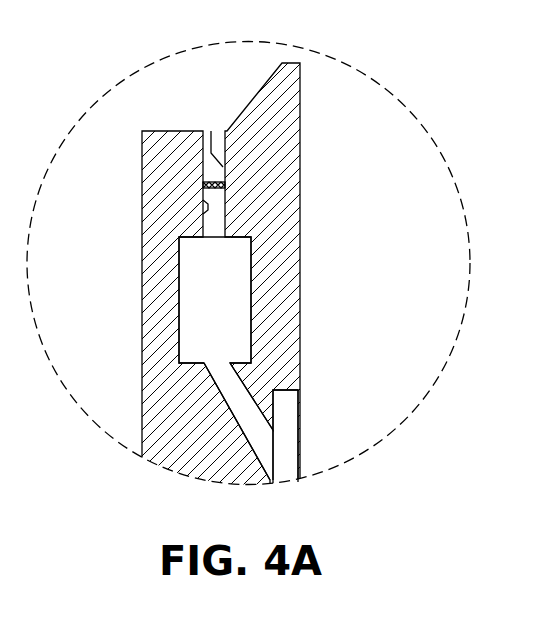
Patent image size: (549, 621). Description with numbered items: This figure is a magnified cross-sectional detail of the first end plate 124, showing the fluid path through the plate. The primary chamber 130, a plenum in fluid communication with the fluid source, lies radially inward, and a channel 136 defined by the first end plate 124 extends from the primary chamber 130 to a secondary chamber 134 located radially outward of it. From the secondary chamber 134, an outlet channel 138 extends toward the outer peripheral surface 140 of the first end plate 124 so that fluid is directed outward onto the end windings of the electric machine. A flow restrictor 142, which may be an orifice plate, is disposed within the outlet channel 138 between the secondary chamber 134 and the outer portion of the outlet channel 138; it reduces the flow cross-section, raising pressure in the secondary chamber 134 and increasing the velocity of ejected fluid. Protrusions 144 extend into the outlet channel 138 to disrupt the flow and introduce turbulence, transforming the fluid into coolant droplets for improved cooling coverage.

The first end plate 124 is at (178, 66).
The outer peripheral surface 140 is at (177, 131).
The outlet channel 138 is at (210, 148).
The flow restrictor 142 is at (207, 178).
The protrusion 144 is at (212, 131).
The secondary chamber 134 is at (213, 300).
The channel 136 is at (242, 408).
The primary chamber 130 is at (287, 426).